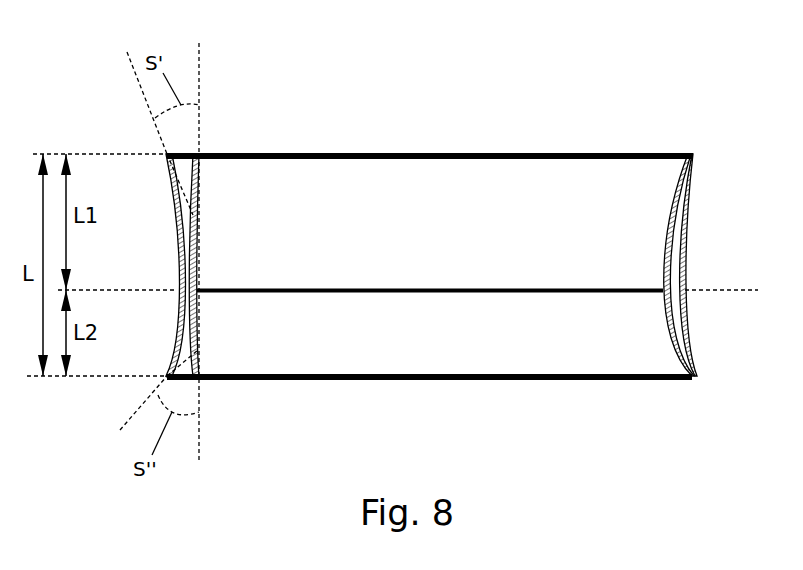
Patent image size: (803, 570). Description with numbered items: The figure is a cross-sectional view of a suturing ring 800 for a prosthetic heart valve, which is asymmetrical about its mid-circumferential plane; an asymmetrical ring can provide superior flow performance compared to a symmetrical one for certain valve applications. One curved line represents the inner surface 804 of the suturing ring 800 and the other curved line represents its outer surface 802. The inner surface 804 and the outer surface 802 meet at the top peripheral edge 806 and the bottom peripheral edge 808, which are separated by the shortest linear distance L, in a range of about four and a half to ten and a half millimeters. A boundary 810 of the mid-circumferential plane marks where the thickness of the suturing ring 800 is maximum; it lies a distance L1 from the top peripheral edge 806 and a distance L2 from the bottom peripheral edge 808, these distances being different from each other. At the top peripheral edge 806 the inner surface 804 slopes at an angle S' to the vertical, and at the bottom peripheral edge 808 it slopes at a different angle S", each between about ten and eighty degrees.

The suturing ring 800 is at (463, 66).
The outer surface 802 is at (180, 305).
The inner surface 804 is at (198, 308).
The top peripheral edge 806 is at (167, 154).
The bottom peripheral edge 808 is at (167, 377).
The boundary of the mid-circumferential plane 810 is at (698, 290).